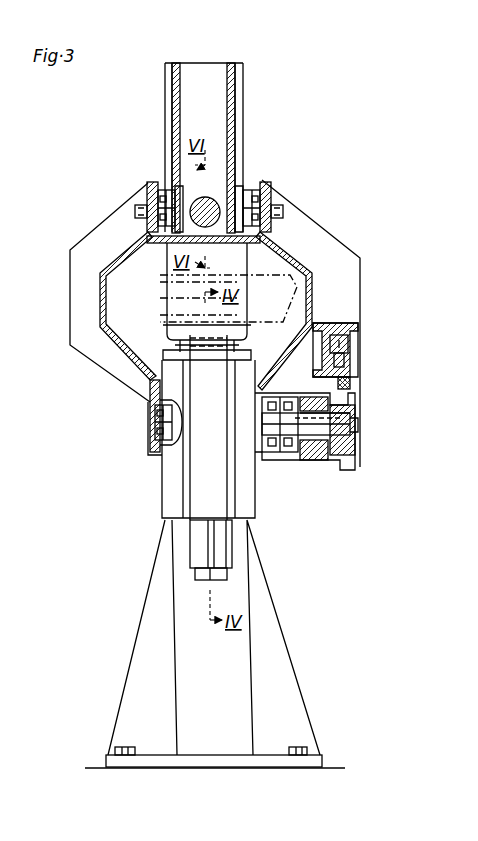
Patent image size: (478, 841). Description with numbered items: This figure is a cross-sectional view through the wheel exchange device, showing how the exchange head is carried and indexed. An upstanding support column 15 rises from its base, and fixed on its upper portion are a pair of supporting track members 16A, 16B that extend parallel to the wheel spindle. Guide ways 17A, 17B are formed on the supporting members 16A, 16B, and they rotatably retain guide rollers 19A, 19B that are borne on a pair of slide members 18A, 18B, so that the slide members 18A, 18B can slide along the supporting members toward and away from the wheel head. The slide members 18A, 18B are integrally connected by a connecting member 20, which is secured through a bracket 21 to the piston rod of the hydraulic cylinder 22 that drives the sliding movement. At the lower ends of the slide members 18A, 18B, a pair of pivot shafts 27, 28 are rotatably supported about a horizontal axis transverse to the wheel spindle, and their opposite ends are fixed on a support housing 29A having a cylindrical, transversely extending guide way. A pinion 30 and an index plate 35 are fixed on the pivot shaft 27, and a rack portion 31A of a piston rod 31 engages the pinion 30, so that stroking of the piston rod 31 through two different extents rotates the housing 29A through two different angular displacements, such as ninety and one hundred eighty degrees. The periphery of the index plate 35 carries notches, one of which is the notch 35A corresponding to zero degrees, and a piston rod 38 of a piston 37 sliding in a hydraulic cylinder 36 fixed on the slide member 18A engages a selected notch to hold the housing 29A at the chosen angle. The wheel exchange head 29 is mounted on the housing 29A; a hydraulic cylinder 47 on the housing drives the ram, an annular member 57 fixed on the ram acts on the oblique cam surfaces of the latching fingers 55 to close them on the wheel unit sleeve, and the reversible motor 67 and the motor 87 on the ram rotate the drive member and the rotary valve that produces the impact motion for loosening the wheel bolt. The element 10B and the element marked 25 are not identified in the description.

The housing 10B is at (108, 312).
The support column 15 is at (228, 708).
The supporting track member 16A is at (246, 120).
The supporting track member 16B is at (172, 126).
The guide way 17A is at (262, 222).
The guide way 17B is at (160, 222).
The slide member 18A is at (318, 248).
The slide member 18B is at (100, 248).
The guide roller 19A is at (270, 188).
The guide roller 19B is at (150, 186).
The connecting member 20 is at (228, 284).
The bracket 21 is at (158, 244).
The hydraulic cylinder 22 is at (232, 178).
The ball 25 is at (212, 190).
The pivot shaft 27 is at (280, 458).
The pivot shaft 28 is at (152, 428).
The wheel exchange head 29 is at (272, 522).
The support housing 29A is at (178, 442).
The pinion 30 is at (315, 462).
The piston rod 31 is at (325, 406).
The rack portion 31A is at (353, 428).
The index plate 35 is at (356, 455).
The notch 35A is at (352, 383).
The hydraulic cylinder 36 is at (340, 323).
The piston 37 is at (350, 344).
The piston rod 38 is at (350, 362).
The hydraulic cylinder 47 is at (192, 497).
The latching finger 55 is at (160, 342).
The annular member 57 is at (158, 352).
The hydraulically operated reversible motor 67 is at (195, 543).
The motor 87 is at (200, 578).